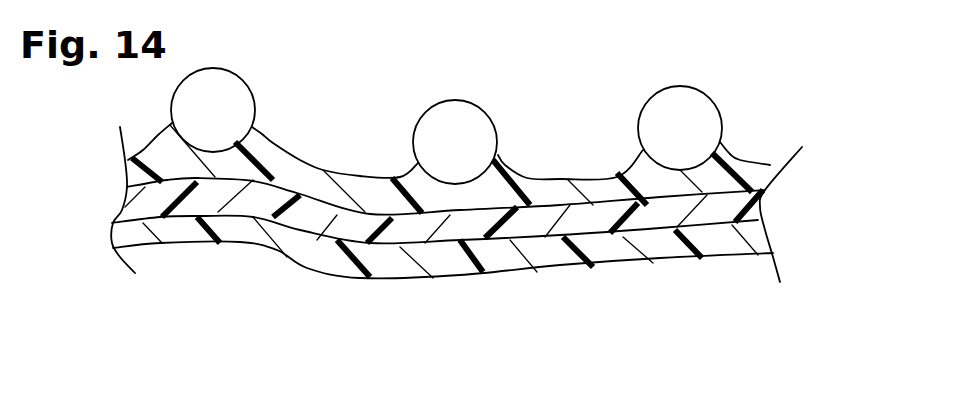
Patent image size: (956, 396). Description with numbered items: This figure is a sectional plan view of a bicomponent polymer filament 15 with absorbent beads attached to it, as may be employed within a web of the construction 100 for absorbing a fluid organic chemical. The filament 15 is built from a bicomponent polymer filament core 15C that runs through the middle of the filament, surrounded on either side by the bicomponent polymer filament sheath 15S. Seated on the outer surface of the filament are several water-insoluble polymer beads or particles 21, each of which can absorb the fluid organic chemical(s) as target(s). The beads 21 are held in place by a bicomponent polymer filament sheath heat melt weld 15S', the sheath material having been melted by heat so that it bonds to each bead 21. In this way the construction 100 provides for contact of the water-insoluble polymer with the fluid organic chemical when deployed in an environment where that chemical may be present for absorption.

The construction for absorbing a fluid organic chemical 100 is at (182, 332).
The water-insoluble polymer bead or particle 21 is at (237, 75).
The bicomponent polymer filament 15 is at (702, 279).
The bicomponent polymer filament sheath heat melt weld 15S' is at (523, 149).
The bicomponent polymer filament sheath 15S is at (443, 232).
The bicomponent polymer filament core 15C is at (305, 215).